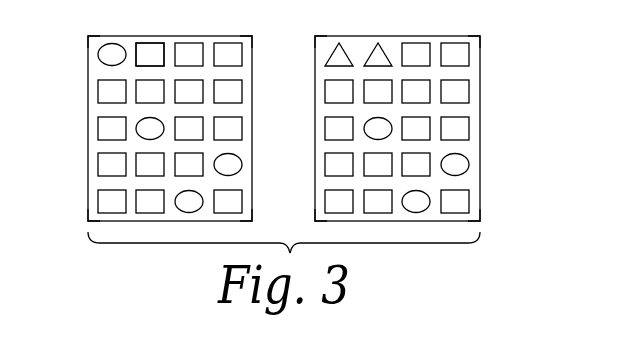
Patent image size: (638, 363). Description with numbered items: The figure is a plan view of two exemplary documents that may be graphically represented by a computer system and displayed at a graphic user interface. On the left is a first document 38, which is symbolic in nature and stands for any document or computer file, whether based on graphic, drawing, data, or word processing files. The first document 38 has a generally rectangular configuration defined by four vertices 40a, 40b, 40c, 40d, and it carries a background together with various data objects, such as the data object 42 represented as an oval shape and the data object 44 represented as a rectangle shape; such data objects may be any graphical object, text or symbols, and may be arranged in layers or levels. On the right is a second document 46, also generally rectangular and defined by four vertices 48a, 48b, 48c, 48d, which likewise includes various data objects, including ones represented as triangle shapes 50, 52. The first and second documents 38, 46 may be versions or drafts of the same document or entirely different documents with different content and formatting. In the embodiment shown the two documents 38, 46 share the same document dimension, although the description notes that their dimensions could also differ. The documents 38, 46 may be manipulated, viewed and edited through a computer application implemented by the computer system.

The first document 38 is at (200, 36).
The vertex 40a is at (88, 36).
The vertex 40b is at (252, 36).
The vertex 40c is at (252, 221).
The vertex 40d is at (88, 221).
The data object 42 is at (113, 50).
The data object 44 is at (151, 47).
The second document 46 is at (418, 36).
The vertex 48a is at (315, 36).
The vertex 48b is at (480, 36).
The vertex 48c is at (480, 221).
The vertex 48d is at (315, 221).
The first triangular aperture 50 is at (339, 44).
The second triangular aperture 52 is at (378, 44).